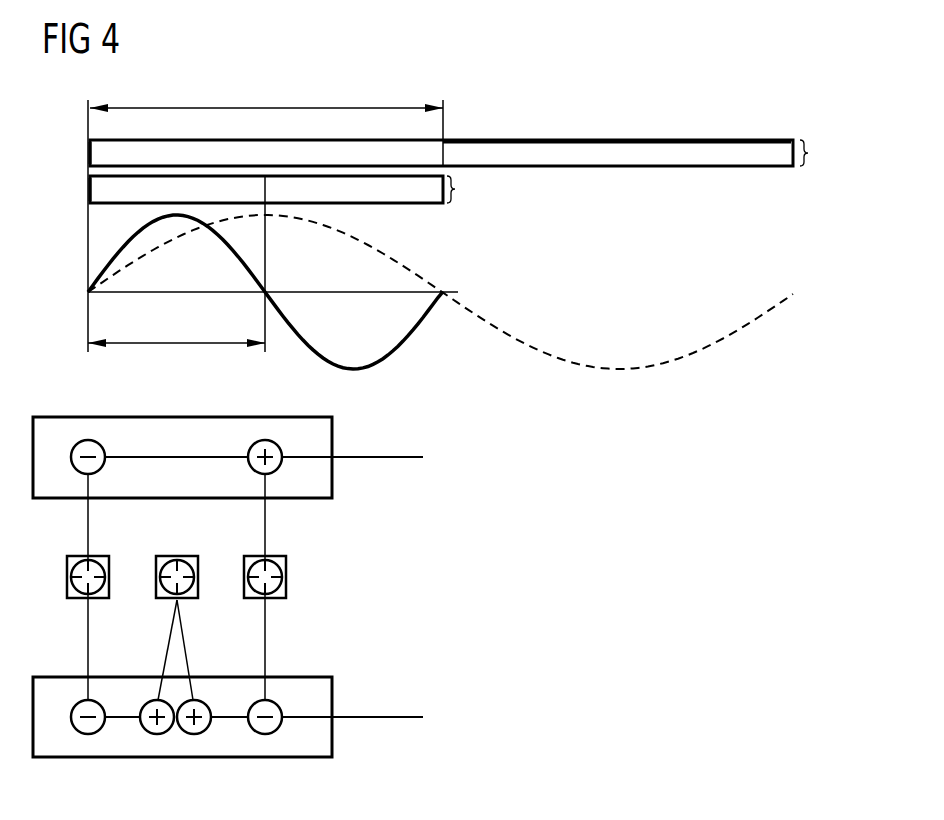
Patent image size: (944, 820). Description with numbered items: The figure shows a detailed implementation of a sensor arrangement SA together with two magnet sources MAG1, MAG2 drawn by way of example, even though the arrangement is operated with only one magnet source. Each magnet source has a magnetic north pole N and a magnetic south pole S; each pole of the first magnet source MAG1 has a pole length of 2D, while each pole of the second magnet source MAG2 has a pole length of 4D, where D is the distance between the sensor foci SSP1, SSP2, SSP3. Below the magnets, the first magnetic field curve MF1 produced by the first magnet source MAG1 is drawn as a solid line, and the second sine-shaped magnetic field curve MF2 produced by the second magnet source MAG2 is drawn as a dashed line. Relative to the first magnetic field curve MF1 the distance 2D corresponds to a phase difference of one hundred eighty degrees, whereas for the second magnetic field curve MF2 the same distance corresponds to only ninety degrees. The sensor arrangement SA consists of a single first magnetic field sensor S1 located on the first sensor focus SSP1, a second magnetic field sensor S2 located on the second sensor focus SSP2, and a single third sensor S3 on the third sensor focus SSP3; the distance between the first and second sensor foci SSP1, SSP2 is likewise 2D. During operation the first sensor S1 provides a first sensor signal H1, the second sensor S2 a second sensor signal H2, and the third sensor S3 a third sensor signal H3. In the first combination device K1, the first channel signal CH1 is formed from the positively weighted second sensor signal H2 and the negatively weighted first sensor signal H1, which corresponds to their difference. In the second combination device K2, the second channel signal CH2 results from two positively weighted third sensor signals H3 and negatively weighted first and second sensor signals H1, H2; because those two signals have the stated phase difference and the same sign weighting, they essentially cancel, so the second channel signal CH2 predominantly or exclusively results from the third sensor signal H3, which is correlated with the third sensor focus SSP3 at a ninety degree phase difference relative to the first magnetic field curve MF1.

The pole length 4D is at (266, 95).
The pole length 2D is at (176, 328).
The first magnet source MAG1 is at (306, 192).
The second magnet source MAG2 is at (482, 154).
The magnetic north pole N is at (100, 152).
The magnetic south pole S is at (606, 146).
The first magnetic field curve MF1 is at (397, 357).
The second magnetic field curve MF2 is at (533, 352).
The first channel signal CH1 is at (373, 458).
The second channel signal CH2 is at (379, 717).
The first combination device K1 is at (333, 477).
The second combination device K2 is at (333, 737).
The first sensor signal H1 is at (73, 587).
The second sensor signal H2 is at (281, 587).
The third sensor signal H3 is at (175, 650).
The sensor arrangement SA is at (212, 564).
The first sensor S1 is at (54, 578).
The second magnetic field sensor S2 is at (308, 585).
The third sensor S3 is at (190, 553).
The first sensor focus SSP1 is at (67, 567).
The second sensor focus SSP2 is at (287, 583).
The third sensor focus SSP3 is at (167, 556).